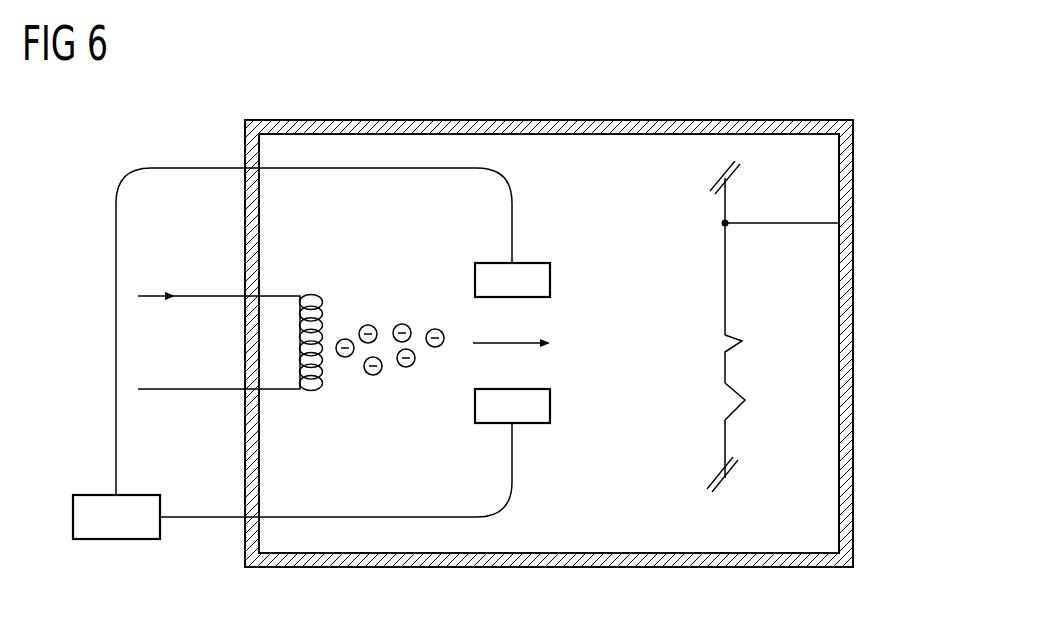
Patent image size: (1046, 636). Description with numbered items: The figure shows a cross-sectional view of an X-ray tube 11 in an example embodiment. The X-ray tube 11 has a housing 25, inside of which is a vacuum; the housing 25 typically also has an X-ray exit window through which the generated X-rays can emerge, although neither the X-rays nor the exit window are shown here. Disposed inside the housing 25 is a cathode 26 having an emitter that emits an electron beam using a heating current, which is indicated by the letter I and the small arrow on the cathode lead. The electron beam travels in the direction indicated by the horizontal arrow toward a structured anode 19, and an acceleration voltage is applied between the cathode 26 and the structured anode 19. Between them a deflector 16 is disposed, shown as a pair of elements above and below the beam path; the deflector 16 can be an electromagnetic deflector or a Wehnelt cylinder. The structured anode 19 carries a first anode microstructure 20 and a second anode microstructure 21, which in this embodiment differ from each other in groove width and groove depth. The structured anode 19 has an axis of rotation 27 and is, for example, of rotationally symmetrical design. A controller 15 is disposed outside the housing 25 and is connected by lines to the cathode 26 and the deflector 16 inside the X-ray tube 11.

The X-ray tube 11 is at (828, 103).
The controller 15 is at (118, 540).
The deflector 16 is at (550, 280).
The structured anode 19 is at (725, 275).
The first anode microstructure 20 is at (742, 341).
The second anode microstructure 21 is at (745, 400).
The housing 25 is at (853, 340).
The cathode 26 is at (280, 390).
The axis of rotation 27 is at (788, 222).